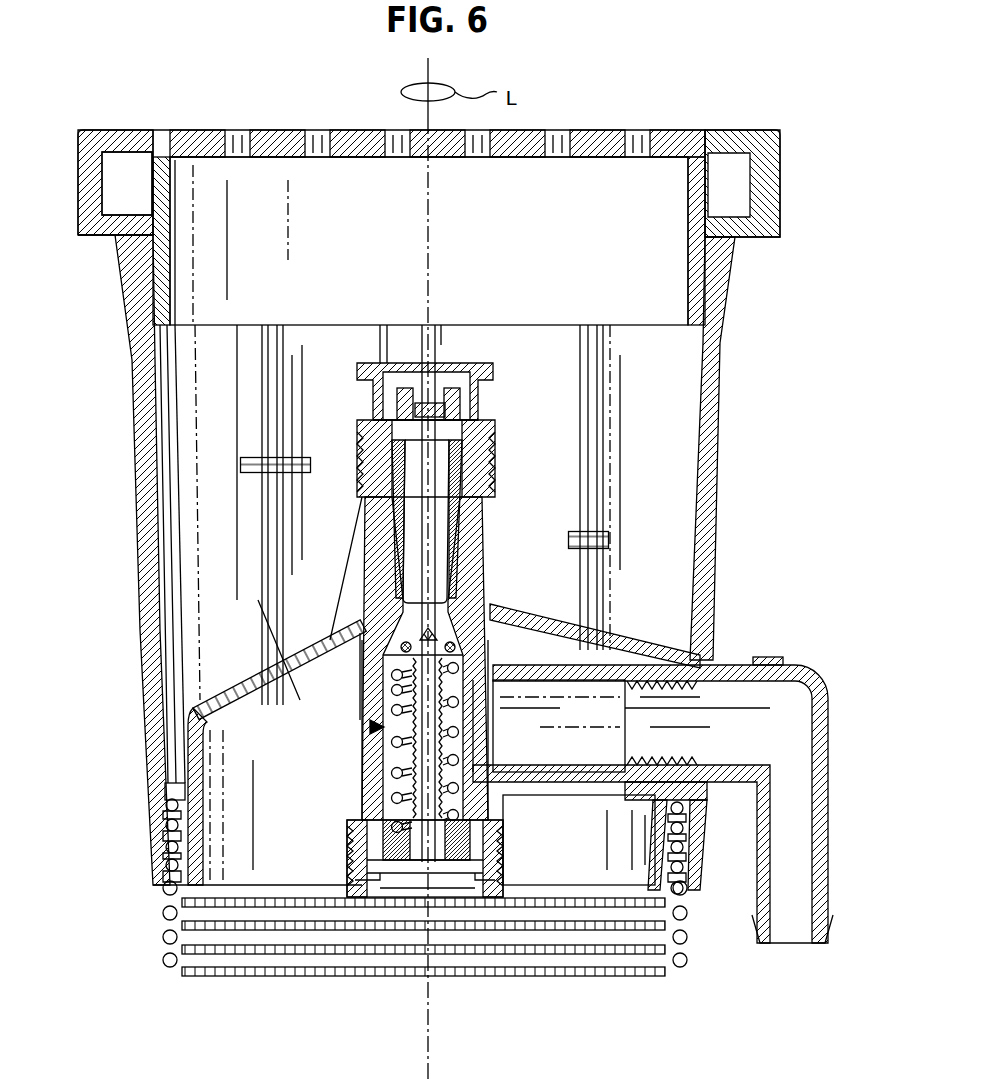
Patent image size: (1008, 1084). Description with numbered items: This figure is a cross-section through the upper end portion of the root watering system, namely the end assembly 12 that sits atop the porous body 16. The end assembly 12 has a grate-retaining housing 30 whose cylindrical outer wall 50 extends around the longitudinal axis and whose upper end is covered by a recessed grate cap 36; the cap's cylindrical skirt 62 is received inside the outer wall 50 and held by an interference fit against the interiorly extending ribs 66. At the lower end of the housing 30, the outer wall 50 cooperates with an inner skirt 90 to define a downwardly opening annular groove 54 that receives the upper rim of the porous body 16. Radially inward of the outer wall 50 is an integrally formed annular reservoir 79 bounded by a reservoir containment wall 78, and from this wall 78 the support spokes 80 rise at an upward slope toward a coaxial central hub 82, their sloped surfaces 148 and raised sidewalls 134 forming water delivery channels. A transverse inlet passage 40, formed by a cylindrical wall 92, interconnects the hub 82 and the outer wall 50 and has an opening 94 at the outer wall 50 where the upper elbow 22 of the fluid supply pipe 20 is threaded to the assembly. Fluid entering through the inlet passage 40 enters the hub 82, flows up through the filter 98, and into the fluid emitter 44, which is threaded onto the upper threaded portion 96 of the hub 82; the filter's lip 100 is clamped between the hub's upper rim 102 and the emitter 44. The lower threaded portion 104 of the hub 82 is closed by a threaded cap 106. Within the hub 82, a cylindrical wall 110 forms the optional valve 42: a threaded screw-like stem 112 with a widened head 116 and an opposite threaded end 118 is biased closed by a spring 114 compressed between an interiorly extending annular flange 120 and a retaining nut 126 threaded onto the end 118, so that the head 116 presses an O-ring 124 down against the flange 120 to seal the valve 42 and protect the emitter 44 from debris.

The end assembly 12 is at (146, 455).
The porous body 16 is at (168, 934).
The fluid supply pipe 20 is at (813, 682).
The upper elbow 22 is at (758, 852).
The grate-retaining housing 30 is at (140, 550).
The grate cap 36 is at (603, 130).
The inlet passage 40 is at (653, 977).
The valve 42 is at (337, 725).
The fluid emitter 44 is at (382, 360).
The outer wall 50 is at (134, 492).
The annular groove 54 is at (678, 892).
The cylindrical skirt 62 is at (697, 270).
The ribs 66 is at (274, 360).
The reservoir containment wall 78 is at (203, 708).
The annular reservoir 79 is at (170, 793).
The support spokes 80 is at (273, 712).
The central hub 82 is at (472, 516).
The inner skirt 90 is at (193, 833).
The cylindrical wall 92 is at (650, 650).
The opening 94 is at (708, 672).
The upper threaded portion 96 is at (492, 506).
The filter 98 is at (445, 514).
The lip 100 is at (487, 422).
The upper rim 102 is at (360, 442).
The lower threaded portion 104 is at (505, 835).
The threaded cap 106 is at (372, 878).
The cylindrical wall 110 is at (357, 780).
The stem 112 is at (440, 723).
The spring 114 is at (575, 870).
The head 116 is at (453, 645).
The threaded end 118 is at (427, 865).
The annular flange 120 is at (432, 665).
The O-ring 124 is at (473, 655).
The retaining nut 126 is at (456, 868).
The raised sidewalls 134 is at (258, 662).
The sloped surfaces 148 is at (277, 665).